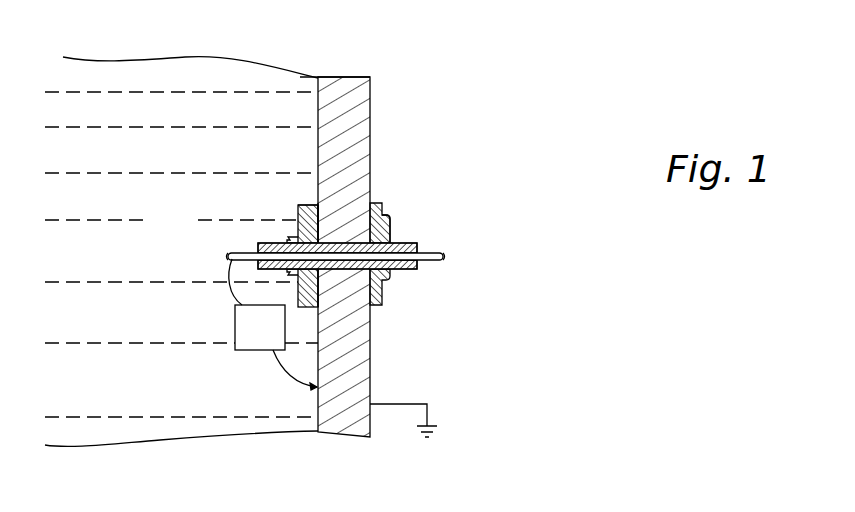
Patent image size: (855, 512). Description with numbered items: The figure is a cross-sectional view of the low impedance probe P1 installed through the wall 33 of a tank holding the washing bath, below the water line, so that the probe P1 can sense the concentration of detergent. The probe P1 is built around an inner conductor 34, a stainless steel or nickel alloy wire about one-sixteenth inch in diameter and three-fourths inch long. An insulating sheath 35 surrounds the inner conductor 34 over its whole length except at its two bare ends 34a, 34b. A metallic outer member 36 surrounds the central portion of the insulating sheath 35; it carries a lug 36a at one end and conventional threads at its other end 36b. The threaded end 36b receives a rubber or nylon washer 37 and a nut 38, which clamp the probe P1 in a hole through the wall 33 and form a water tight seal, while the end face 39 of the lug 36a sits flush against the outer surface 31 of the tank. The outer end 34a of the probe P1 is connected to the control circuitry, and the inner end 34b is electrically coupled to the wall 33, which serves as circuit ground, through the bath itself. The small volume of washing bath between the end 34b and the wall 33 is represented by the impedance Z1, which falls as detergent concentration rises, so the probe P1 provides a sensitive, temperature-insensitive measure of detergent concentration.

The outer surface 31 is at (371, 100).
The wall 33 is at (327, 92).
The inner conductor 34 is at (250, 252).
The end 34a is at (446, 261).
The end 34b is at (231, 255).
The insulating sheath 35 is at (410, 243).
The metallic outer member 36 is at (385, 305).
The lug 36a is at (388, 214).
The end 36b is at (295, 238).
The washer 37 is at (316, 207).
The nut 38 is at (298, 205).
The end face 39 is at (367, 203).
The low impedance probe P1 is at (466, 238).
The impedance Z1 is at (273, 324).